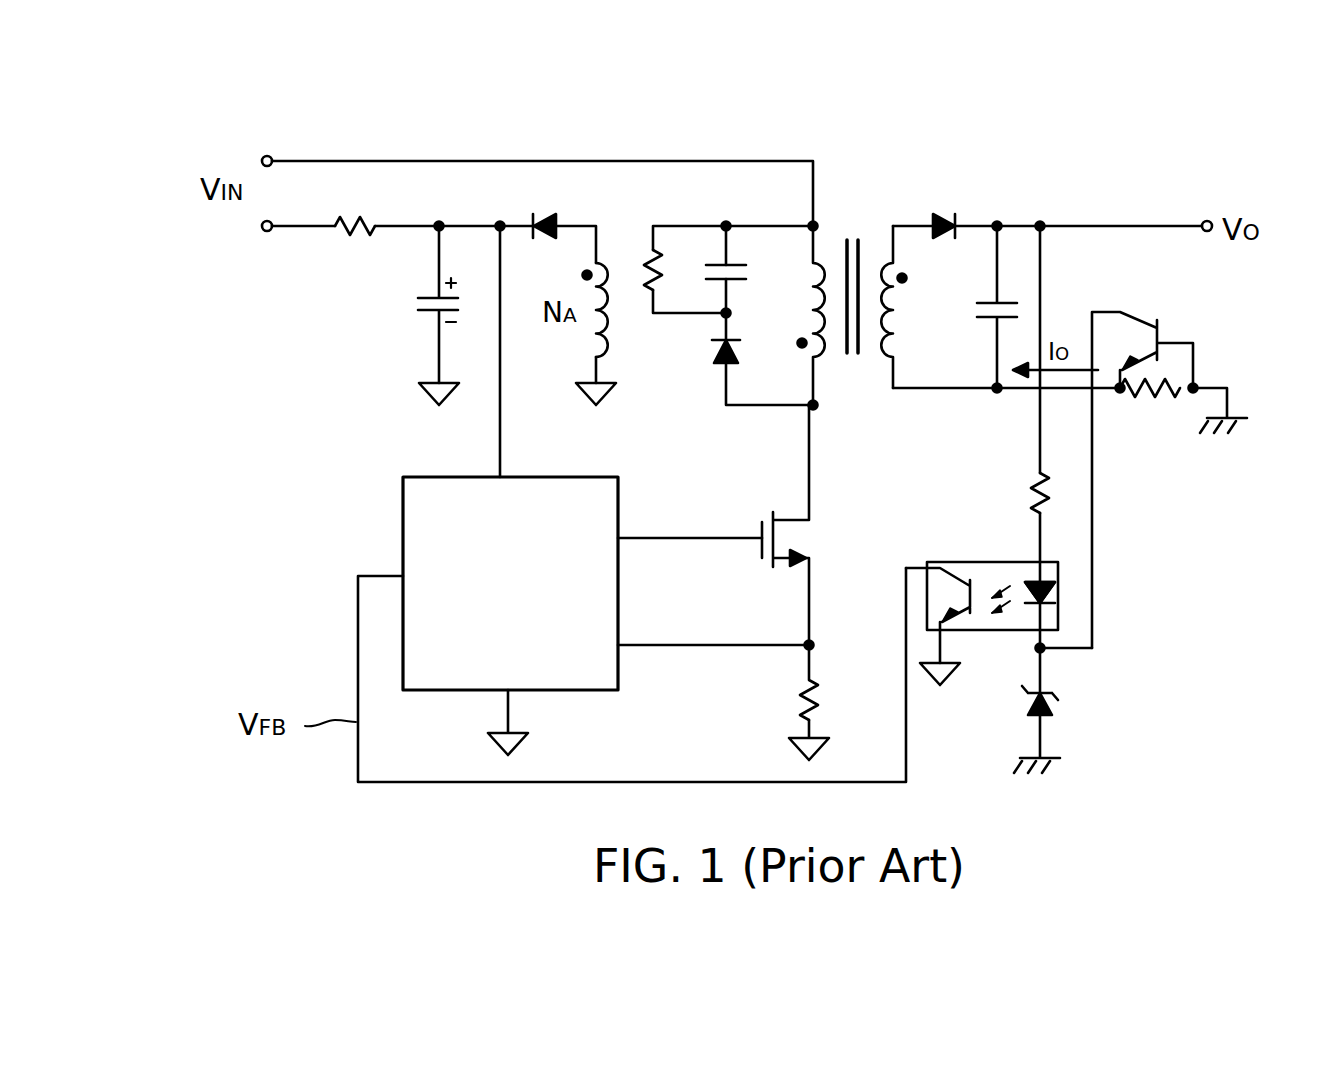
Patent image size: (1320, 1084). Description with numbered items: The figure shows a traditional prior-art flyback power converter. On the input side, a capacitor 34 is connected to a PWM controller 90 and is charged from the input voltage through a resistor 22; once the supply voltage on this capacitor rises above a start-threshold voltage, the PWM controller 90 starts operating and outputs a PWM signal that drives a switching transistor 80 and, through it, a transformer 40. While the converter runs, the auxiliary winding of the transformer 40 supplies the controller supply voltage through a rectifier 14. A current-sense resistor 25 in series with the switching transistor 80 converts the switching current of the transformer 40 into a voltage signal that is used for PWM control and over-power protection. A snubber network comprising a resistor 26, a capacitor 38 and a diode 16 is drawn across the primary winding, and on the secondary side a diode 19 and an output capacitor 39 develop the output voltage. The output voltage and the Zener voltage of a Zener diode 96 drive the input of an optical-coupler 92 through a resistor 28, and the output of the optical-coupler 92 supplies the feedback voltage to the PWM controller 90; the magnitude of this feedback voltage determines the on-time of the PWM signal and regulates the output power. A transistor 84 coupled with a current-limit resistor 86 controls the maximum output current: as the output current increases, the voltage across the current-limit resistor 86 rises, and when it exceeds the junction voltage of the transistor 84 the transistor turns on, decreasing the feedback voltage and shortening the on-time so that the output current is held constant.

The resistor 22 is at (355, 198).
The rectifier 14 is at (540, 203).
The snubber resistor 26 is at (660, 240).
The snubber capacitor 38 is at (740, 255).
The transformer 40 is at (856, 222).
The output rectifier diode 19 is at (942, 213).
The capacitor 34 is at (414, 318).
The snubber diode 16 is at (712, 366).
The output capacitor 39 is at (977, 322).
The transistor 84 is at (1153, 323).
The current-limit resistor 86 is at (1155, 412).
The resistor 28 is at (1028, 499).
The PWM controller 90 is at (622, 492).
The switching transistor 80 is at (807, 552).
The optical-coupler 92 is at (956, 560).
The current-sense resistor 25 is at (792, 703).
The Zener diode 96 is at (1055, 709).